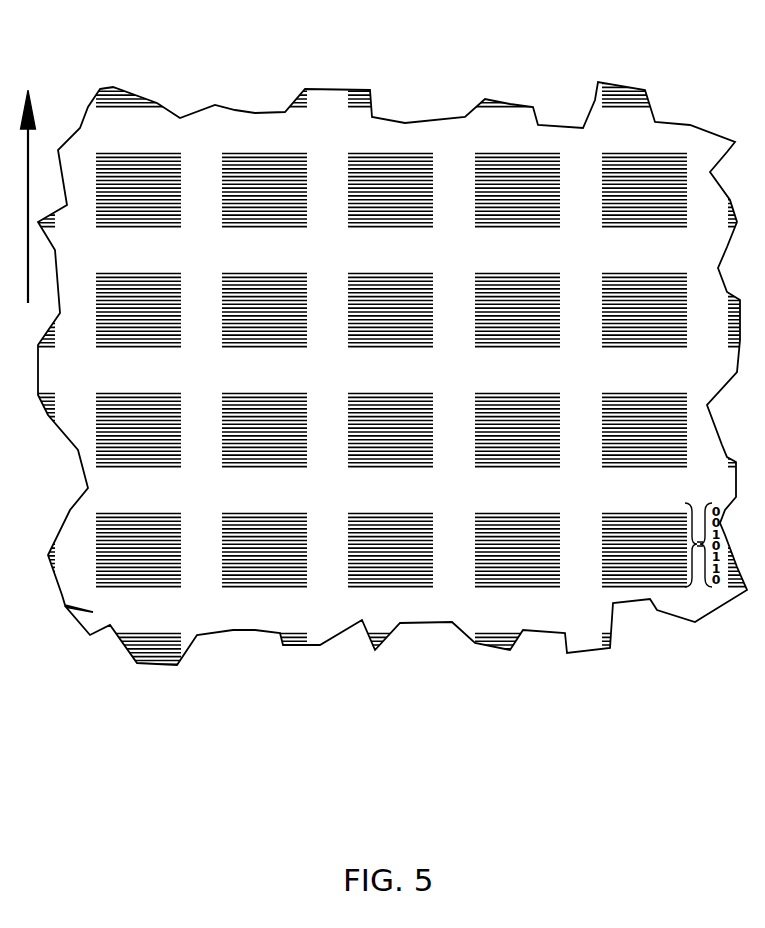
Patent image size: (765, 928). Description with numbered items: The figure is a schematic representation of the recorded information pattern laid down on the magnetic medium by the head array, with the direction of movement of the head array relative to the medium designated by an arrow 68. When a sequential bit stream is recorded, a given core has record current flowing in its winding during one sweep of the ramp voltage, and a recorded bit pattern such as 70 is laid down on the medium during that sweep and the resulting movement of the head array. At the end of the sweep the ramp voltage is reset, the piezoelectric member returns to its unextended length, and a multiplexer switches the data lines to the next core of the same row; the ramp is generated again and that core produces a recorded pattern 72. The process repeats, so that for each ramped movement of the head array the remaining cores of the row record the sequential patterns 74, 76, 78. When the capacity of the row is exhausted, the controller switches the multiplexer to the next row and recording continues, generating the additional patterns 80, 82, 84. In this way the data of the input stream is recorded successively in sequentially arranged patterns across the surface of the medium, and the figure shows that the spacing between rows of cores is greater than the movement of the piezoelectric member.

The arrow 68 is at (28, 90).
The recorded bit pattern 70 is at (618, 512).
The recorded pattern 72 is at (494, 512).
The sequential pattern 74 is at (369, 512).
The sequential pattern 76 is at (244, 512).
The sequential pattern 78 is at (117, 512).
The additional pattern 80 is at (616, 392).
The additional pattern 82 is at (494, 392).
The additional pattern 84 is at (368, 392).